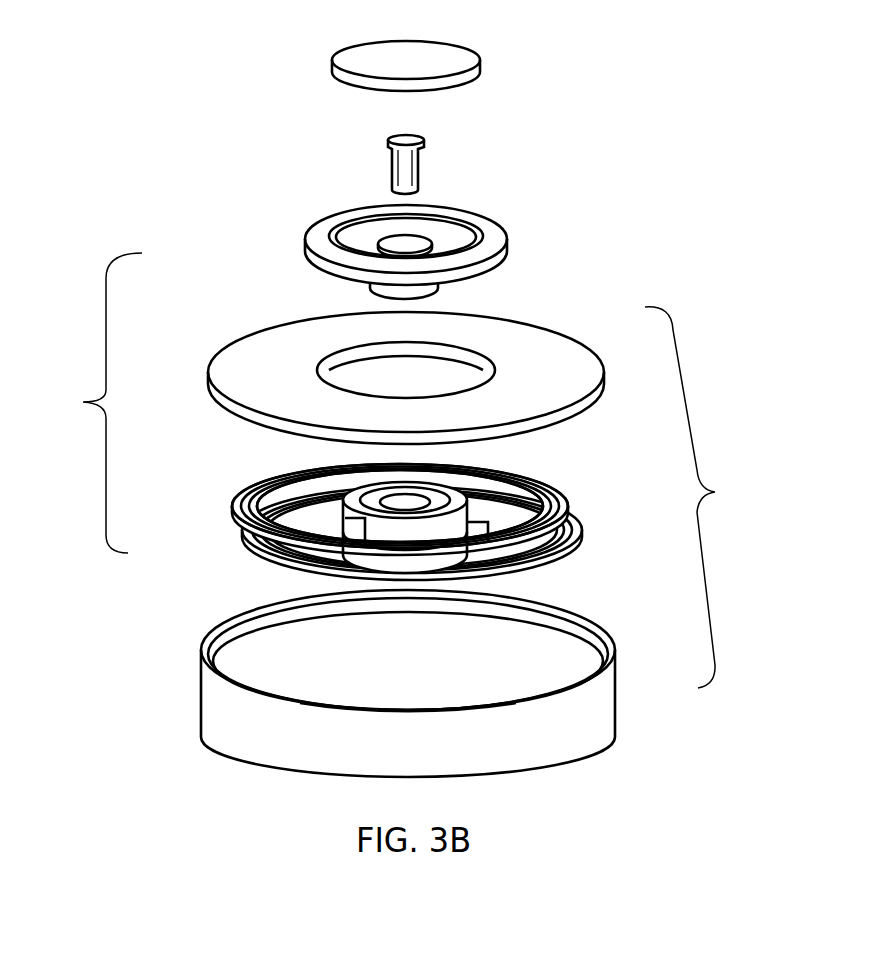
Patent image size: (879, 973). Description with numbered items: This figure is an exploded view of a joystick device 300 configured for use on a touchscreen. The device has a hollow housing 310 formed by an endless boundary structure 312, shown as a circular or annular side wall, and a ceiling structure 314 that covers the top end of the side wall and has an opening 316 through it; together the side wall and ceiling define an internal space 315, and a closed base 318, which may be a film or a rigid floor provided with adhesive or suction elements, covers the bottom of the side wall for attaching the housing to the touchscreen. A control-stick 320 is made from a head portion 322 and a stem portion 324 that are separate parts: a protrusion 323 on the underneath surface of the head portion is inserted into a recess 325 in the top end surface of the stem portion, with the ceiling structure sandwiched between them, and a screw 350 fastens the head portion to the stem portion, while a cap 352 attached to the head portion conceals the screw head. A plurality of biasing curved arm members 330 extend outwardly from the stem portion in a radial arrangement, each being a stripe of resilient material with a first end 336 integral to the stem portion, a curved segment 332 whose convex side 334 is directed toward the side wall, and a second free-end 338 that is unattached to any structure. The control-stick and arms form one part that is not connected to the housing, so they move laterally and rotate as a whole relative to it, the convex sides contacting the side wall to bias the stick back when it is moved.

The joystick device 300 is at (651, 98).
The hollow housing 310 is at (708, 497).
The endless boundary structure 312 is at (598, 692).
The ceiling structure 314 is at (557, 357).
The internal space 315 is at (535, 658).
The opening 316 is at (377, 387).
The base 318 is at (431, 697).
The control-stick 320 is at (86, 403).
The head portion 322 is at (340, 265).
The protrusion 323 is at (420, 290).
The stem portion 324 is at (262, 543).
The recess 325 is at (410, 494).
The biasing curved arm members 330 is at (242, 500).
The curved segment 332 is at (262, 482).
The convex side 334 is at (250, 489).
The first end 336 is at (350, 505).
The second free-end 338 is at (240, 518).
The screw 350 is at (410, 171).
The cap 352 is at (365, 62).